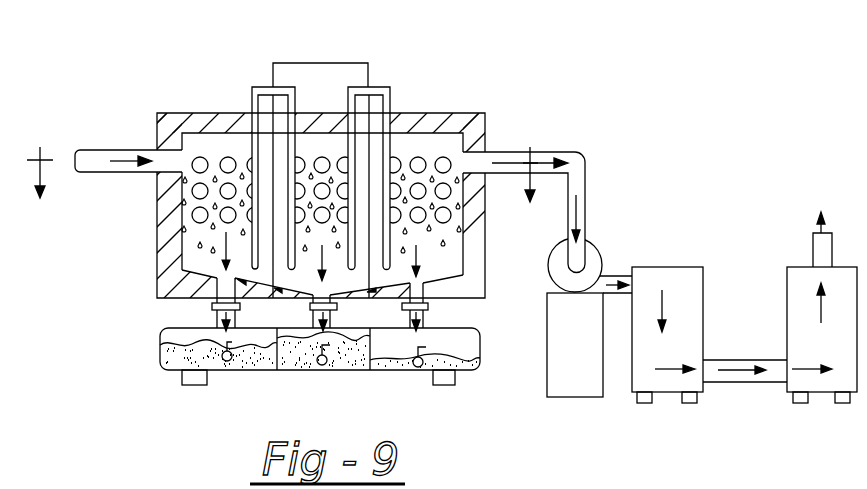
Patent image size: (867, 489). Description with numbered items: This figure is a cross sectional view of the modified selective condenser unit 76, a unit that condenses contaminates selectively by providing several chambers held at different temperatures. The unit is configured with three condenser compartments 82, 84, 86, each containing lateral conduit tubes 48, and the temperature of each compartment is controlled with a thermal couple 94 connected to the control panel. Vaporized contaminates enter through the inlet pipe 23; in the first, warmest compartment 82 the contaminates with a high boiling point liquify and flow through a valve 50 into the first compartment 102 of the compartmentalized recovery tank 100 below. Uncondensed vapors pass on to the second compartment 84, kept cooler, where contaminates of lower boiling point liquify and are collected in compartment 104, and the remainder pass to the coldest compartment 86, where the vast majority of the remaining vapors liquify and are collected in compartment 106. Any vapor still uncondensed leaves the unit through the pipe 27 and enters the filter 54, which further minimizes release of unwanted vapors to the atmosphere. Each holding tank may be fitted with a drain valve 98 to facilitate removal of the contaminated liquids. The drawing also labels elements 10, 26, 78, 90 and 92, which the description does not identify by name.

The gas stream flow arrows 10 is at (285, 195).
The inlet pipe 23 is at (100, 174).
The blower 26 is at (598, 248).
The pipe 27 is at (555, 150).
The lateral conduit tubes 48 is at (198, 156).
The valve 50 is at (212, 307).
The filter 54 is at (787, 287).
The selective condenser unit 76 is at (480, 102).
The header duct 78 is at (300, 63).
The first condenser compartment 82 is at (228, 143).
The second condenser compartment 84 is at (307, 150).
The third condenser compartment 86 is at (415, 148).
The inlet end wall 90 is at (167, 240).
The top wall 92 is at (335, 122).
The thermal couple 94 is at (480, 130).
The drain valve 98 is at (313, 364).
The compartmentalized recovery tank 100 is at (148, 355).
The first compartment of recovery tank 102 is at (172, 363).
The second compartment of recovery tank 104 is at (347, 360).
The third compartment of recovery tank 106 is at (463, 371).